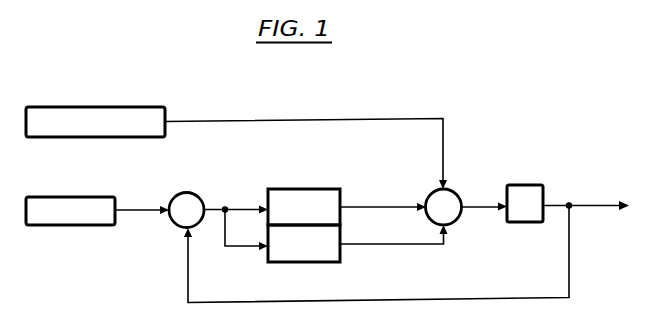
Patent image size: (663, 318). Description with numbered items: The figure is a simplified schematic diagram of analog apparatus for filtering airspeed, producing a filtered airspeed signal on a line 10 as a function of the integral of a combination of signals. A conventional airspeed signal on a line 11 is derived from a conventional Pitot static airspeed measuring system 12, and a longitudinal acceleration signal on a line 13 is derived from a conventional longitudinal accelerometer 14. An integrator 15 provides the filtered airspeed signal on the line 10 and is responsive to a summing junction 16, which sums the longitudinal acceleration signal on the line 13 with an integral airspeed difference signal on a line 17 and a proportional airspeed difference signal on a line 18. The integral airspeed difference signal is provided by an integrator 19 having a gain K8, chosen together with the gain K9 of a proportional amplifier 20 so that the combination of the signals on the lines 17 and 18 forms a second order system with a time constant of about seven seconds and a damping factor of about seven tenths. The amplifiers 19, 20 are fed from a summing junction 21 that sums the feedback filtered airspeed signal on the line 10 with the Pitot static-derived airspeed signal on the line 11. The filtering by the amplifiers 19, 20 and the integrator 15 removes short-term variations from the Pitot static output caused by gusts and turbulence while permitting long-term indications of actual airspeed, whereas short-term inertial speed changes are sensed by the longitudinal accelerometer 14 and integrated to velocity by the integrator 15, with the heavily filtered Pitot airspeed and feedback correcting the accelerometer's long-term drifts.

The line 10 is at (591, 210).
The line 11 is at (134, 210).
The Pitot static airspeed measuring system 12 is at (66, 197).
The line 13 is at (282, 120).
The longitudinal accelerometer 14 is at (80, 107).
The integrator 15 is at (520, 185).
The summing junction 16 is at (457, 194).
The line 17 is at (382, 207).
The line 18 is at (375, 245).
The integrator 19 is at (303, 189).
The proportional amplifier 20 is at (300, 262).
The summing junction 21 is at (200, 197).